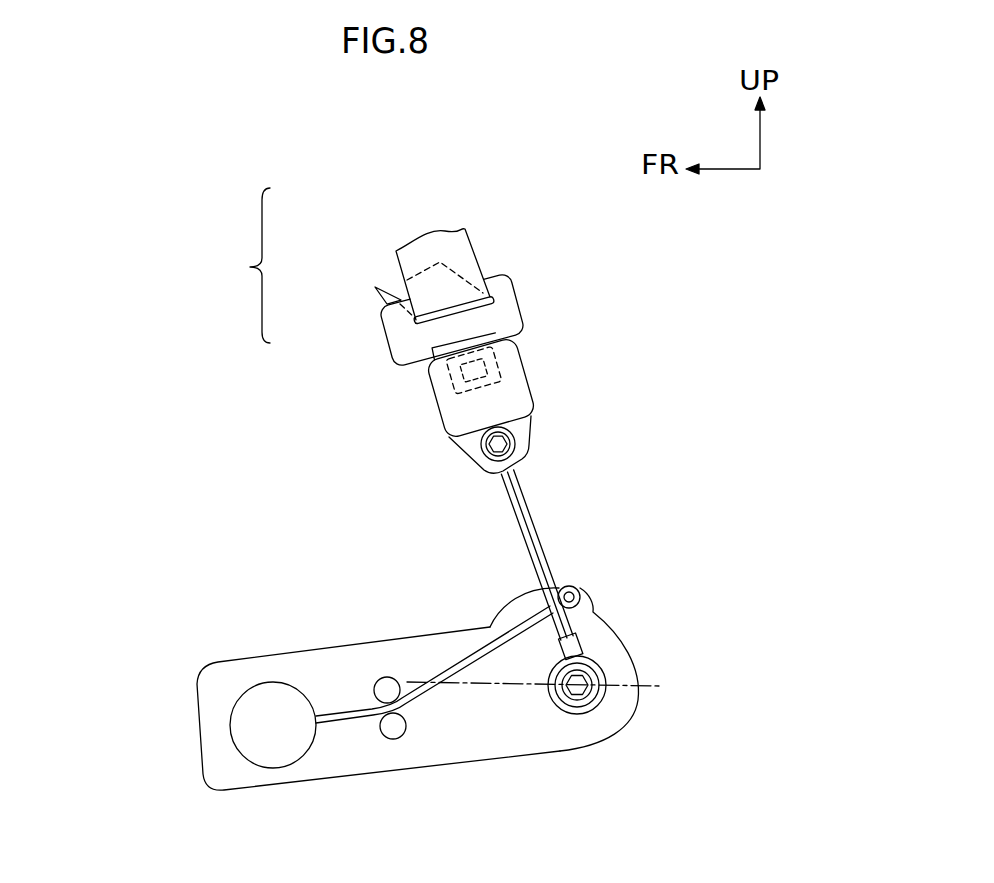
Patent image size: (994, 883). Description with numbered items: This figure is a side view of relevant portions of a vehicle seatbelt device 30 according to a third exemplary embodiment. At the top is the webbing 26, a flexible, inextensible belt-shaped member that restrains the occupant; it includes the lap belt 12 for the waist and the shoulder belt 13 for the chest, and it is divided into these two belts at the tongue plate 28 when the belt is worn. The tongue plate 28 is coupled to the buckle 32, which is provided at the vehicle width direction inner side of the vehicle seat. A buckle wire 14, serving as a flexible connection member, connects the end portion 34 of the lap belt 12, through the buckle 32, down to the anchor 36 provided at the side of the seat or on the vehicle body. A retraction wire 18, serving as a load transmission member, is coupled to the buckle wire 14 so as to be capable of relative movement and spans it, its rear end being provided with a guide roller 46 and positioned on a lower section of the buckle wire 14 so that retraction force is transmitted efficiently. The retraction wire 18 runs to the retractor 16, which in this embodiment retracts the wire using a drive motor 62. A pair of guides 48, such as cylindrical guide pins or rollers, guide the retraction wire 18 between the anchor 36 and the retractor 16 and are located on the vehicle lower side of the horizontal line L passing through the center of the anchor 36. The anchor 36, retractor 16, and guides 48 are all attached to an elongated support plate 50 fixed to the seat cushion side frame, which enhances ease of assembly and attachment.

The vehicle seatbelt device 30 is at (134, 270).
The webbing 26 is at (243, 265).
The shoulder belt 13 is at (393, 264).
The lap belt 12 is at (380, 294).
The tongue plate 28 is at (522, 291).
The end portion 34 is at (623, 294).
The buckle 32 is at (529, 372).
The buckle wire 14 is at (532, 517).
The guide roller 46 is at (603, 608).
The horizontal line L is at (658, 684).
The anchor 36 is at (576, 714).
The support plate 50 is at (372, 645).
The retractor 16 is at (230, 683).
The retraction wire 18 is at (480, 630).
The drive motor 62 is at (276, 768).
The guides 48 is at (374, 694).